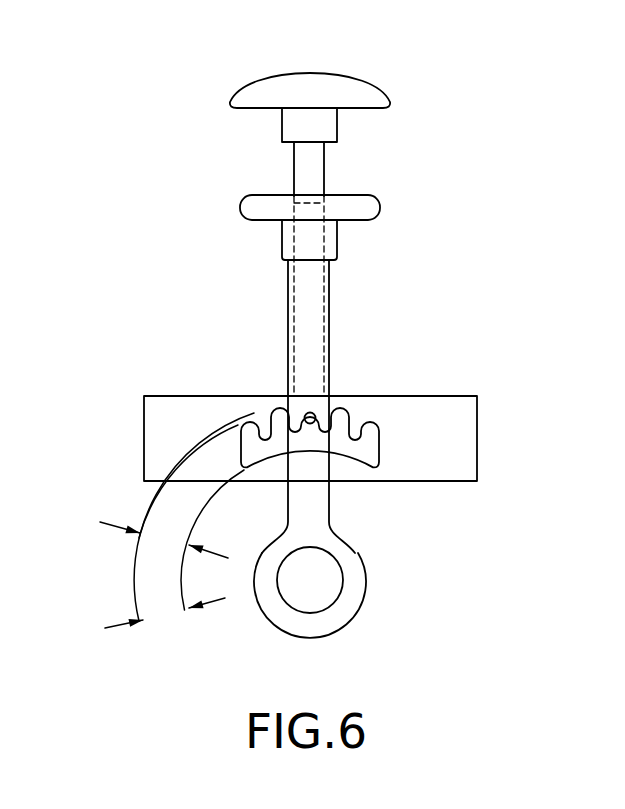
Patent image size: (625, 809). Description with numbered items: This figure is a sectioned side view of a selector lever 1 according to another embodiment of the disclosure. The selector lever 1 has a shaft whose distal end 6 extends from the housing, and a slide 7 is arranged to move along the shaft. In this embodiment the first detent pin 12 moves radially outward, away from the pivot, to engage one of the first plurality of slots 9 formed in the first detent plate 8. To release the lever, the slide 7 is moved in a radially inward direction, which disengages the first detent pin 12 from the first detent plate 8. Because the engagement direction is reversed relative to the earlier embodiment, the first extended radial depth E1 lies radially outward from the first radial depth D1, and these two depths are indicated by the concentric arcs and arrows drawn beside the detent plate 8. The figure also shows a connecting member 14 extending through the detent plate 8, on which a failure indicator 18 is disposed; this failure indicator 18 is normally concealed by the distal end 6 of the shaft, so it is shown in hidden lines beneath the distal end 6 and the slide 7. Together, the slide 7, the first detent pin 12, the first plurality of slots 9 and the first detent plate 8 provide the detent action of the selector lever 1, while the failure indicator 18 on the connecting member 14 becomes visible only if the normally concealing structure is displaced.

The selector lever 1 is at (138, 142).
The slide 7 is at (363, 78).
The failure indicator 18 is at (326, 203).
The distal end 6 is at (242, 210).
The connecting member 14 is at (327, 293).
The first detent plate 8 is at (463, 430).
The first plurality of slots 9 is at (372, 421).
The first detent pin 12 is at (307, 412).
The first extended radial depth E1 is at (177, 517).
The first radial depth D1 is at (174, 552).